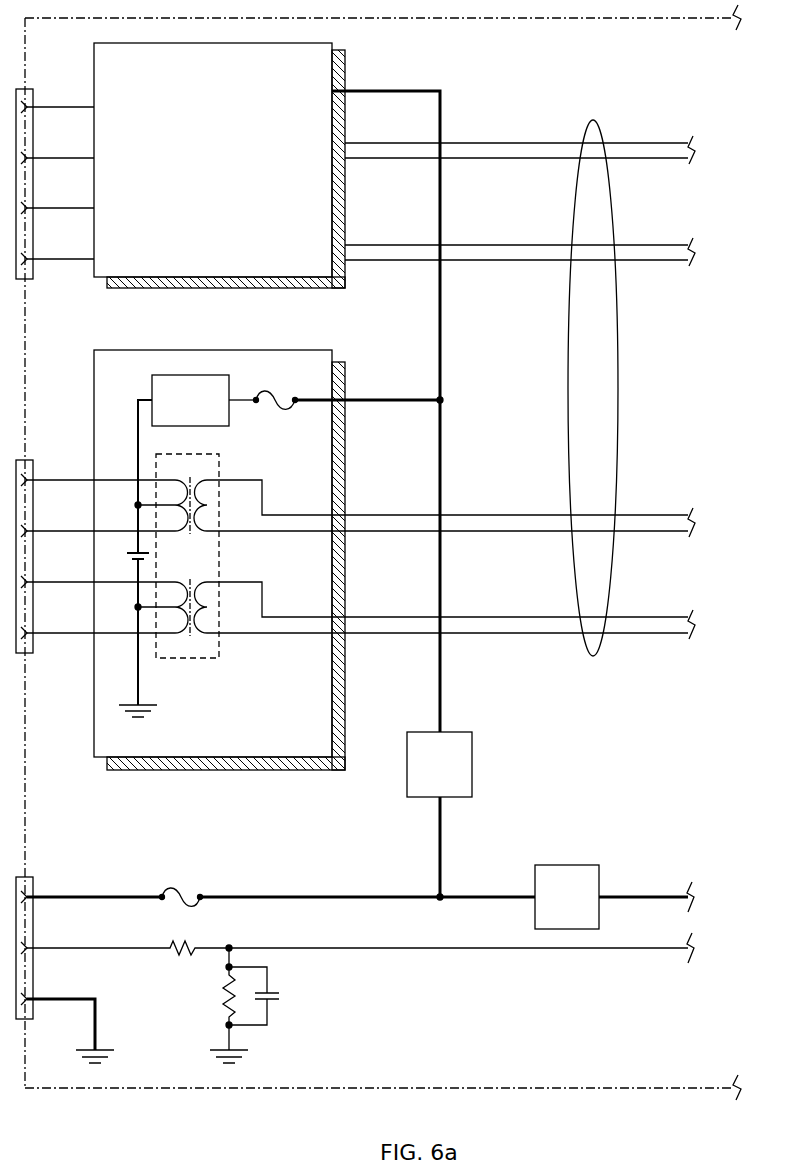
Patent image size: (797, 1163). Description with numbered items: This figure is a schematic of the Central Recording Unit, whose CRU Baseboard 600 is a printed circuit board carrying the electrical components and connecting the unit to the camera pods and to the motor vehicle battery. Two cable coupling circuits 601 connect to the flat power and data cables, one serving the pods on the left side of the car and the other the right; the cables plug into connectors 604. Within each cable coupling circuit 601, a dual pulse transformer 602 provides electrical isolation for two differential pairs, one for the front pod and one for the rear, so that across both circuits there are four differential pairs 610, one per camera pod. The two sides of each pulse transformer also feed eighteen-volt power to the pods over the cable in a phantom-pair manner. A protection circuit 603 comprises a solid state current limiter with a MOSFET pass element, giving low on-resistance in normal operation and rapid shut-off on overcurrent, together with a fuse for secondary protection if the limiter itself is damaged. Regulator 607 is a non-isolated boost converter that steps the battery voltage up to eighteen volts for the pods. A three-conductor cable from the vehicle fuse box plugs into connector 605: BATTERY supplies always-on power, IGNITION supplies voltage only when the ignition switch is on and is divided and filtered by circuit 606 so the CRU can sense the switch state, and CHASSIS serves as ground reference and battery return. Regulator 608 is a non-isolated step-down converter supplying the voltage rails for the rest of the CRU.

The CRU Baseboard 600 is at (665, 1087).
The cable coupling circuit 601 is at (361, 406).
The dual pulse transformer 602 is at (192, 658).
The protection circuit 603 is at (294, 405).
The connectors 604 is at (33, 470).
The connector 605 is at (33, 877).
The circuit 606 is at (222, 1004).
The regulator 607 is at (472, 765).
The regulator 608 is at (592, 865).
The differential pairs 610 is at (592, 122).